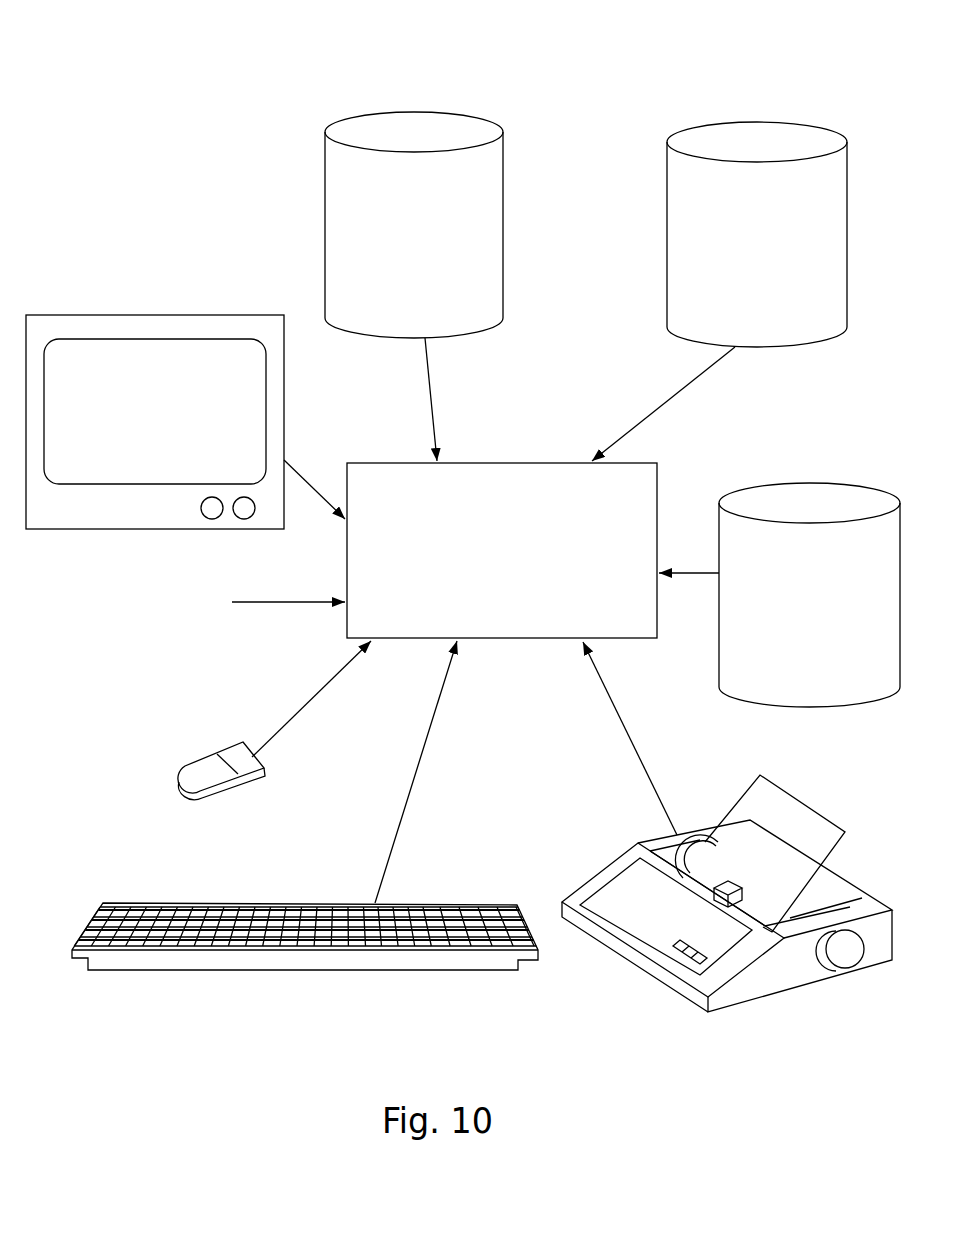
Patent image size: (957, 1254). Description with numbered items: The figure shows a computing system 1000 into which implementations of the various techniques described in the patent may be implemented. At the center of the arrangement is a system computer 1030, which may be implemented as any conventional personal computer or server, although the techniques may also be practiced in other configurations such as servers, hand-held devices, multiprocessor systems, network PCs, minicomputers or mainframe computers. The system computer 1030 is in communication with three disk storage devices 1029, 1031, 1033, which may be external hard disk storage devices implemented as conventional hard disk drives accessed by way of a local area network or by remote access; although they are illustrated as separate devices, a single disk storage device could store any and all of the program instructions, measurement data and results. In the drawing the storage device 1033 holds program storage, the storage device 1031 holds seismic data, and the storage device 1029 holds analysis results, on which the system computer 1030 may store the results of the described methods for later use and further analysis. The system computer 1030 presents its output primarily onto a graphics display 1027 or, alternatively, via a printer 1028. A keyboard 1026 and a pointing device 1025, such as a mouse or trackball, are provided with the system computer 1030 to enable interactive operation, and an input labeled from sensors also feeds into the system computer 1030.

The computing system 1000 is at (208, 103).
The pointing device 1025 is at (195, 762).
The keyboard 1026 is at (315, 968).
The graphics display 1027 is at (169, 314).
The printer 1028 is at (755, 1000).
The disk storage device 1029 is at (760, 485).
The system computer 1030 is at (493, 463).
The disk storage device 1031 is at (765, 122).
The disk storage device 1033 is at (388, 112).